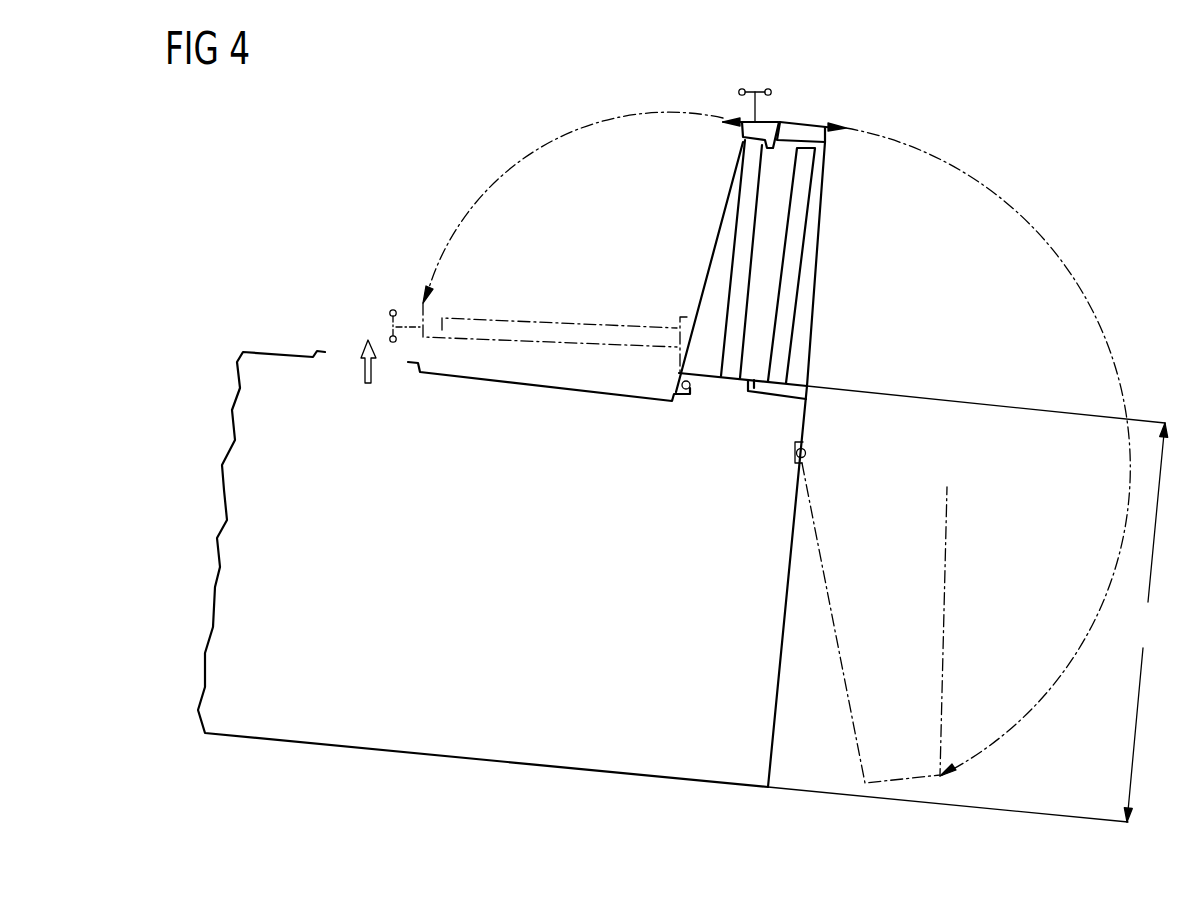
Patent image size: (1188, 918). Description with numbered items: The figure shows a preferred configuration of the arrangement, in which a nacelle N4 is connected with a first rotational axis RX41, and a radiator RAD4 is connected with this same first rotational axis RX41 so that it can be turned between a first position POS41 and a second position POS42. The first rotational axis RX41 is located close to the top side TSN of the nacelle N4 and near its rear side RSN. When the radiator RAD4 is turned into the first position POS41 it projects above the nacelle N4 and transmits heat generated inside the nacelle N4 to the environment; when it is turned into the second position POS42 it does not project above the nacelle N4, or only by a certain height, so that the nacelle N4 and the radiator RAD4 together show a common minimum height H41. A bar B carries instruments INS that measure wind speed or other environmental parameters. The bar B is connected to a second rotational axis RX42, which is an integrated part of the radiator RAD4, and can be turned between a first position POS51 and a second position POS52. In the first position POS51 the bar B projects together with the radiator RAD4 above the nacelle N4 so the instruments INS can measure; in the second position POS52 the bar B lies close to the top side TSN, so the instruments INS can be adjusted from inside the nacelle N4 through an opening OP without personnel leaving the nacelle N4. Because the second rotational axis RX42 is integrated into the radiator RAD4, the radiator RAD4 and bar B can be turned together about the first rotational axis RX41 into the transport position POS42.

The nacelle N4 is at (228, 528).
The top side of the nacelle TSN is at (533, 386).
The opening OP is at (370, 373).
The instruments INS is at (752, 90).
The bar B is at (572, 328).
The rear side of the nacelle RSN is at (776, 725).
The radiator RAD4 is at (804, 120).
The first position of the bar POS51 is at (722, 117).
The first position of the radiator POS41 is at (878, 97).
The second position of the bar POS52 is at (427, 285).
The second position of the radiator POS42 is at (958, 768).
The first rotational axis RX41 is at (806, 452).
The second rotational axis RX42 is at (690, 393).
The common minimum height H41 is at (987, 604).